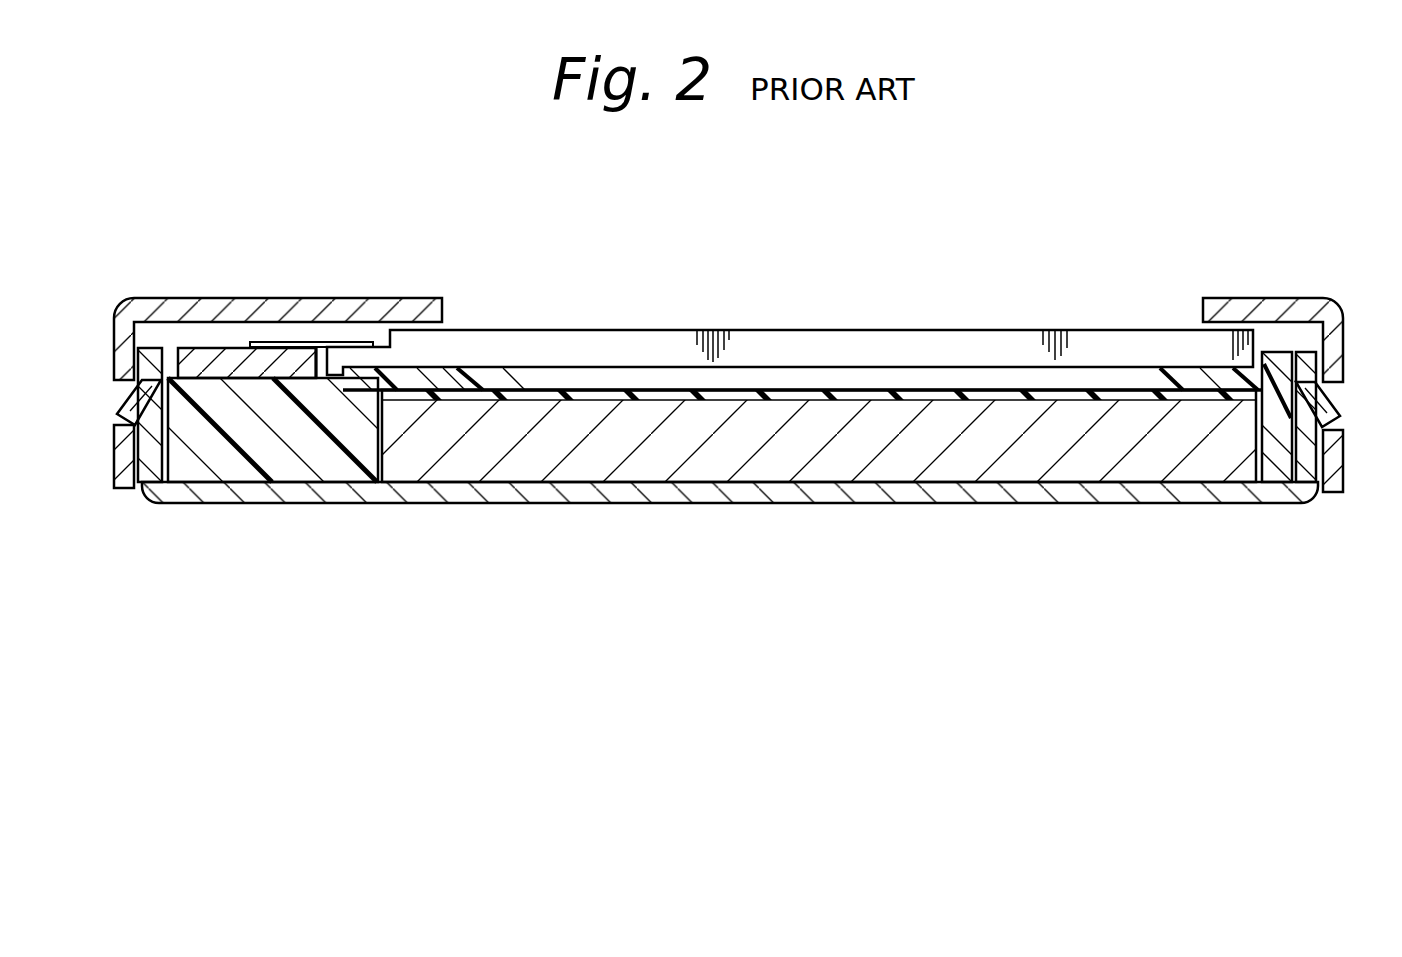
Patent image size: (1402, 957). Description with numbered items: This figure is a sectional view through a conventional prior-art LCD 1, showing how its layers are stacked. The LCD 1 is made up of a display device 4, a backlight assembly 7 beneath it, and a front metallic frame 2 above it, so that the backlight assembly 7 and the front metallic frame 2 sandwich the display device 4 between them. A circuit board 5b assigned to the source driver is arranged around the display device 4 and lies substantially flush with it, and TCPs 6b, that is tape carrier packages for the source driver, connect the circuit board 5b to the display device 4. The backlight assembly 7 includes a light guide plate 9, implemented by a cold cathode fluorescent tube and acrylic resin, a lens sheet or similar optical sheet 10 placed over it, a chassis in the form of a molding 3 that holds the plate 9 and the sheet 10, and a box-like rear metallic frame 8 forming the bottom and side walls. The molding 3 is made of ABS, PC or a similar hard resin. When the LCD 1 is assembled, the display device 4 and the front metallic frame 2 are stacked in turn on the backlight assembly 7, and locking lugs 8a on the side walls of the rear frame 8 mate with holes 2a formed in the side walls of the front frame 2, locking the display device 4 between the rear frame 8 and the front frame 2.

The LCD 1 is at (808, 287).
The front metallic frame 2 is at (1297, 312).
The holes 2a is at (120, 388).
The molding 3 is at (285, 462).
The display device 4 is at (656, 345).
The circuit board 5b is at (215, 360).
The TCPs 6b is at (338, 346).
The backlight assembly 7 is at (1040, 516).
The rear metallic frame 8 is at (703, 488).
The locking lugs 8a is at (120, 410).
The light guide plate 9 is at (896, 462).
The optical sheet 10 is at (960, 395).